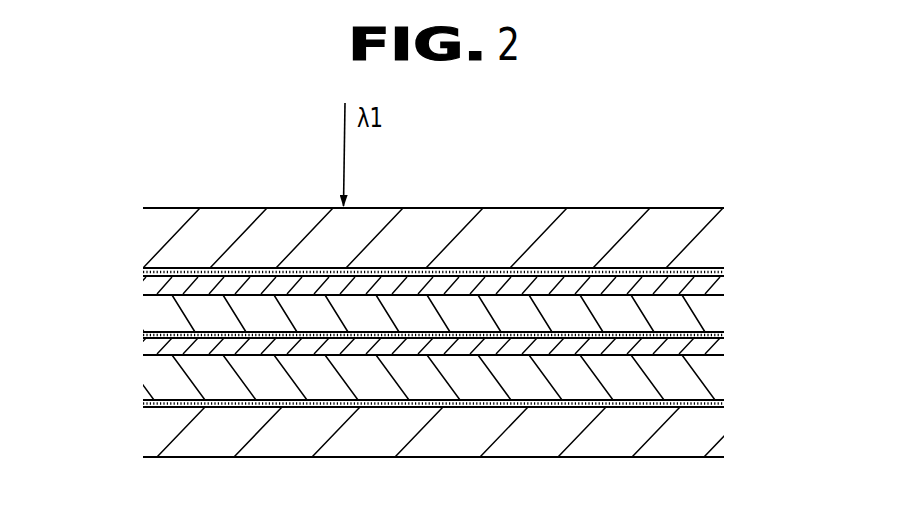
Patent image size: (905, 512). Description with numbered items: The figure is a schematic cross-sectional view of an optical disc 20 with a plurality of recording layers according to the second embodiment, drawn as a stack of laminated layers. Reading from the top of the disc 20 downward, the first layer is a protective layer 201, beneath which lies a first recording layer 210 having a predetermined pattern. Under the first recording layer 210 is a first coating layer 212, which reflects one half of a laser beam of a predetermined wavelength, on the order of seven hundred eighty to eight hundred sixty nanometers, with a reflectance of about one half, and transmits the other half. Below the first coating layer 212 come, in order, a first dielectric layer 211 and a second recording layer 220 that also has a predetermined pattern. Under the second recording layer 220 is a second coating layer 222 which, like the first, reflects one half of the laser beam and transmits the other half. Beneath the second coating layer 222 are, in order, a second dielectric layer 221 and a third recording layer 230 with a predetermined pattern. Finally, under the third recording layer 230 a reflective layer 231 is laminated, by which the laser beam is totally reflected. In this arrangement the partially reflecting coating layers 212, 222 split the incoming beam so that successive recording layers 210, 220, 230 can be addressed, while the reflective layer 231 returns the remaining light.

The optical disc 20 is at (232, 190).
The protective layer 201 is at (143, 240).
The first recording layer 210 is at (143, 272).
The first coating layer 212 is at (728, 286).
The first dielectric layer 211 is at (722, 310).
The second recording layer 220 is at (143, 334).
The second coating layer 222 is at (727, 348).
The second dielectric layer 221 is at (718, 375).
The third recording layer 230 is at (143, 404).
The reflective layer 231 is at (143, 446).